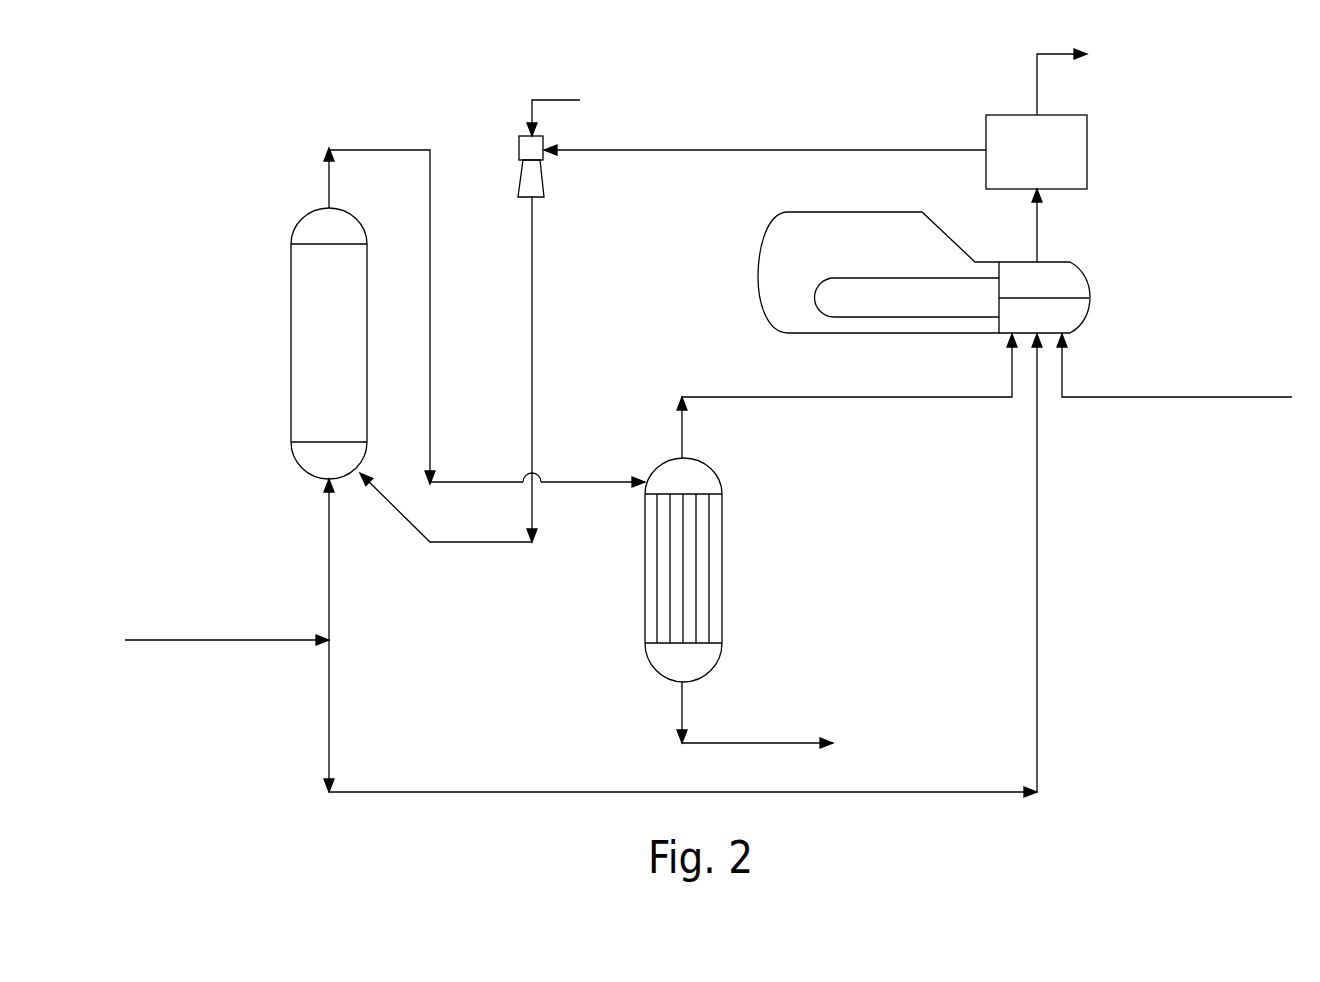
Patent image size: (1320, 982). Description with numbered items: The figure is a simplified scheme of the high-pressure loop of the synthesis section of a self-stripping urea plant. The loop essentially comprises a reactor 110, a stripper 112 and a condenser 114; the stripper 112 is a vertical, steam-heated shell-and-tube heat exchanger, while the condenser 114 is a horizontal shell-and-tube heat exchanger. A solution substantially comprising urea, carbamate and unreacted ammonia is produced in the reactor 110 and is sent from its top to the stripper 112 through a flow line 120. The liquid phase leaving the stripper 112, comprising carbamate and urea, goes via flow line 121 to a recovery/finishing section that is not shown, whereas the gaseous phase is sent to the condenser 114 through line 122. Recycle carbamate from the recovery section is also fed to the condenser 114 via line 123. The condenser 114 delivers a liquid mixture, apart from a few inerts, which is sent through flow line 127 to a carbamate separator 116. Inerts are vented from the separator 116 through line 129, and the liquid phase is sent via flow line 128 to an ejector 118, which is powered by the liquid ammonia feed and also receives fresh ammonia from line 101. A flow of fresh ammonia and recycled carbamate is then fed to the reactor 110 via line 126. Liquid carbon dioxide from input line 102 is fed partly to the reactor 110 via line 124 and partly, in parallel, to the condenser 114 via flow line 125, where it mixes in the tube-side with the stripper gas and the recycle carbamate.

The fresh ammonia line 101 is at (556, 98).
The input line 102 is at (176, 639).
The reactor 110 is at (296, 345).
The stripper 112 is at (717, 554).
The condenser 114 is at (838, 222).
The carbamate separator 116 is at (1080, 150).
The ejector 118 is at (520, 149).
The flow line 120 is at (378, 148).
The flow line 121 is at (783, 742).
The line 122 is at (733, 396).
The line 123 is at (1187, 396).
The line 124 is at (328, 540).
The flow line 125 is at (478, 791).
The line 126 is at (534, 291).
The flow line 127 is at (1039, 232).
The flow line 128 is at (733, 149).
The line 129 is at (1036, 82).